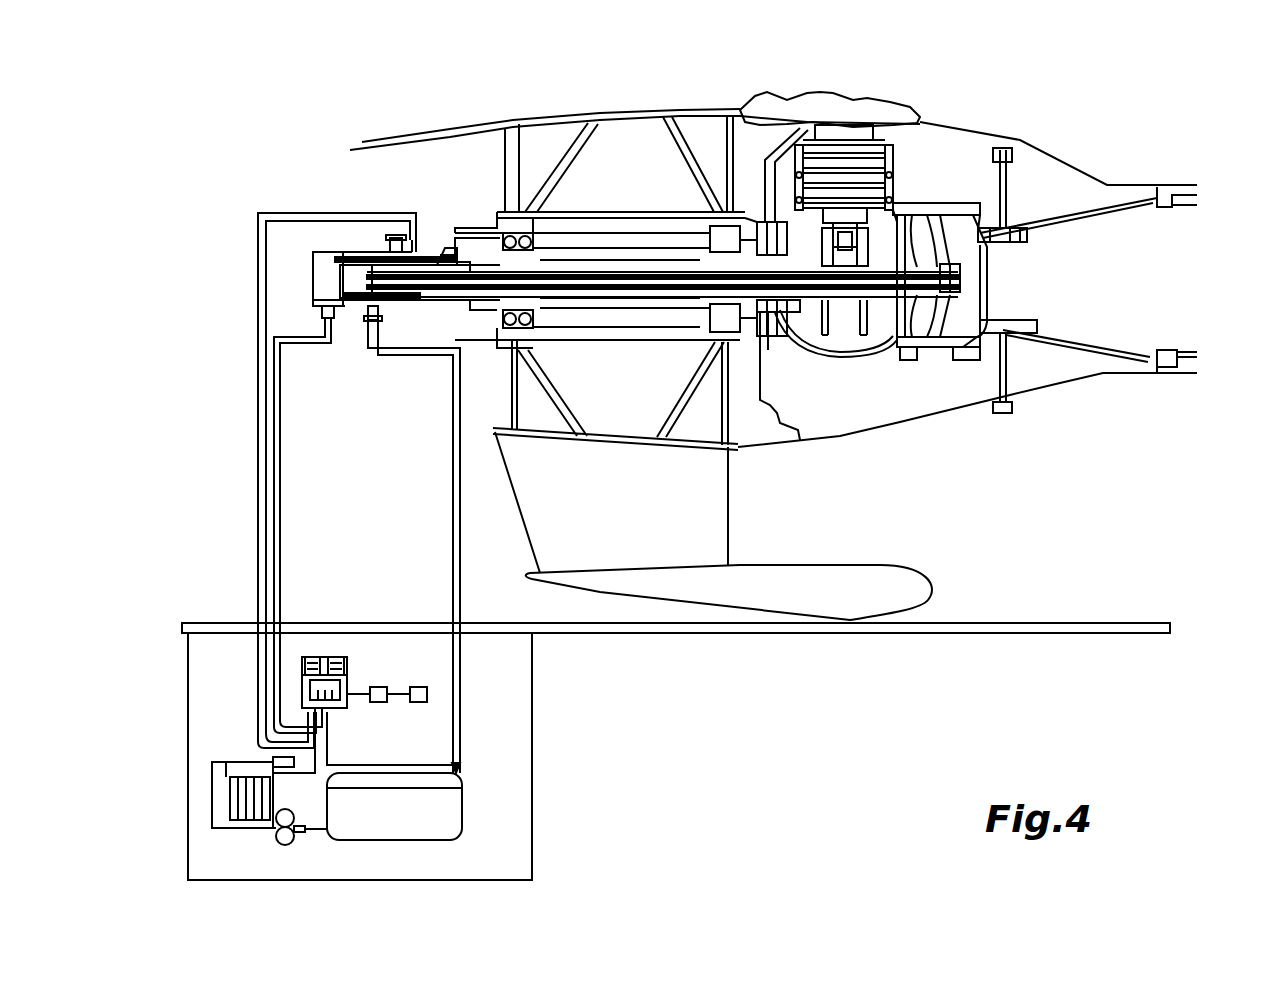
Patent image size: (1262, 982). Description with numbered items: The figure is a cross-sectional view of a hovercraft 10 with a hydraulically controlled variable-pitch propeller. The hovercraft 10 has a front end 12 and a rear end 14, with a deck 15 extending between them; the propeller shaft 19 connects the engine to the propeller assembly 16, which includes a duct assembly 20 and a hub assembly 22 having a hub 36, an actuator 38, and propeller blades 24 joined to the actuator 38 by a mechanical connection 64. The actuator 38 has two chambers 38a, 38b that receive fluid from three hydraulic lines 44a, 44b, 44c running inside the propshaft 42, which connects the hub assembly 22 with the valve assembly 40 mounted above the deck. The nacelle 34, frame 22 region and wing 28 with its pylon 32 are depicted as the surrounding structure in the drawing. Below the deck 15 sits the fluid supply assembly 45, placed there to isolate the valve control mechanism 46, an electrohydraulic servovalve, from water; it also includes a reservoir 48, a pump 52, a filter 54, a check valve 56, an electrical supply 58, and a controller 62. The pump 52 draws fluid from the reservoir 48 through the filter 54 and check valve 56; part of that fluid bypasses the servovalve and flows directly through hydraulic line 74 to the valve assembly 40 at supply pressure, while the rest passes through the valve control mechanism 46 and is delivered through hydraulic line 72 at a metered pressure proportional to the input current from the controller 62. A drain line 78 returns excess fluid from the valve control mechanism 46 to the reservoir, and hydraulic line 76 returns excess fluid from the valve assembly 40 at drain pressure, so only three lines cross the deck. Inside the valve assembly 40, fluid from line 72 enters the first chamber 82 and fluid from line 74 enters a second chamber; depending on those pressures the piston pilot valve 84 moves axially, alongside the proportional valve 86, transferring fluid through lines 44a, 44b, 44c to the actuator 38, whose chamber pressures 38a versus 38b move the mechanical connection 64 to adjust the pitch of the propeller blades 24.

The hovercraft 10 is at (791, 258).
The front end 12 is at (1192, 265).
The rear end 14 is at (372, 510).
The deck 15 is at (650, 633).
The propeller assembly 16 is at (944, 124).
The propeller shaft 19 is at (1177, 325).
The duct assembly 20 is at (740, 556).
The hub assembly 22 is at (858, 354).
The propeller blades 24 is at (842, 120).
The wing 28 is at (843, 578).
The pylon 32 is at (712, 486).
The nacelle inlet cowl 34 is at (530, 125).
The hub 36 is at (830, 360).
The actuator 38 is at (976, 250).
The first chamber of actuator 38a is at (921, 215).
The second chamber of actuator 38b is at (950, 235).
The valve assembly 40 is at (427, 251).
The propshaft 42 is at (553, 255).
The hydraulic line 44a is at (604, 271).
The hydraulic line 44b is at (652, 277).
The hydraulic line 44c is at (696, 298).
The fluid supply assembly 45 is at (378, 756).
The valve control mechanism 46 is at (350, 676).
The reservoir 48 is at (394, 800).
The pump 52 is at (279, 840).
The filter 54 is at (256, 803).
The check valve 56 is at (278, 763).
The electrical supply 58 is at (418, 703).
The controller 62 is at (380, 703).
The mechanical connection 64 is at (834, 263).
The hydraulic line 72 is at (280, 436).
The hydraulic line 74 is at (262, 318).
The hydraulic line 76 is at (430, 353).
The drain line 78 is at (337, 766).
The first chamber 82 is at (322, 278).
The piston pilot valve 84 is at (380, 311).
The proportional valve 86 is at (390, 243).